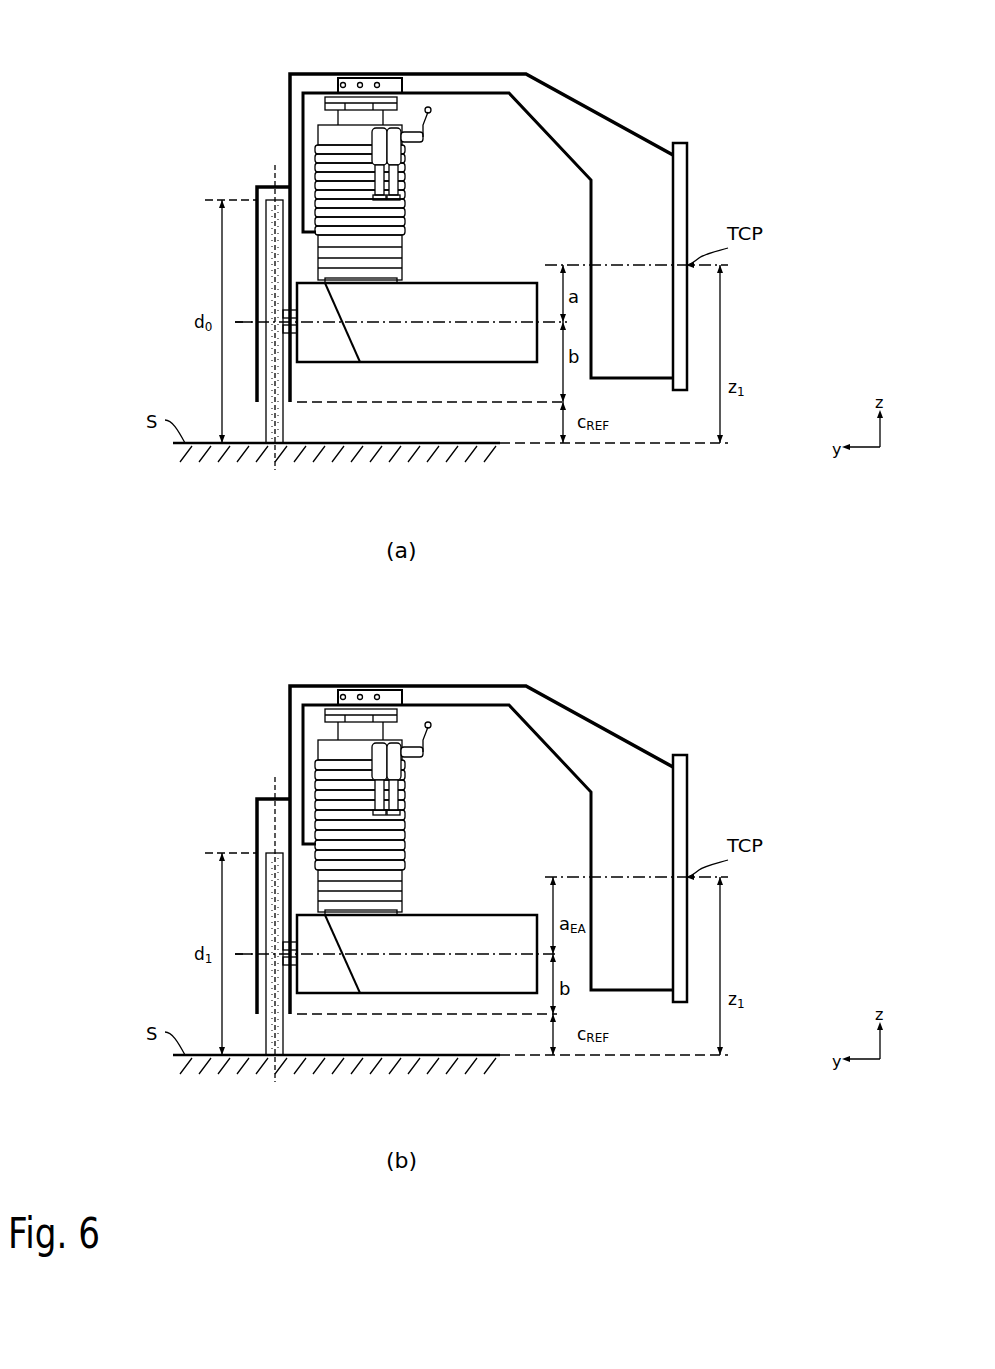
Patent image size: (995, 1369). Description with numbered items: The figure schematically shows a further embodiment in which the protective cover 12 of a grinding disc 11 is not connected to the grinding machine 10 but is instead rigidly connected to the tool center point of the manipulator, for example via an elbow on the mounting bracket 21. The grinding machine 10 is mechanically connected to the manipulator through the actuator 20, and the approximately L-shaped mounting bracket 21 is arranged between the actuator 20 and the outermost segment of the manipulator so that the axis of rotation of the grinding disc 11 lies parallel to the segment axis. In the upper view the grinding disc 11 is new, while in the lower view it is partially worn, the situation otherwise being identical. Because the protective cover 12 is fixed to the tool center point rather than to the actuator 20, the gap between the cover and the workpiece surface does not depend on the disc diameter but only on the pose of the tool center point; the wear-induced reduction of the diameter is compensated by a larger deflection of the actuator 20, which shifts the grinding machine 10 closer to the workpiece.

The grinding machine 10 is at (514, 368).
The grinding disc 11 is at (275, 427).
The protective cover 12 is at (255, 187).
The actuator 20 is at (405, 198).
The mounting bracket 21 is at (585, 133).